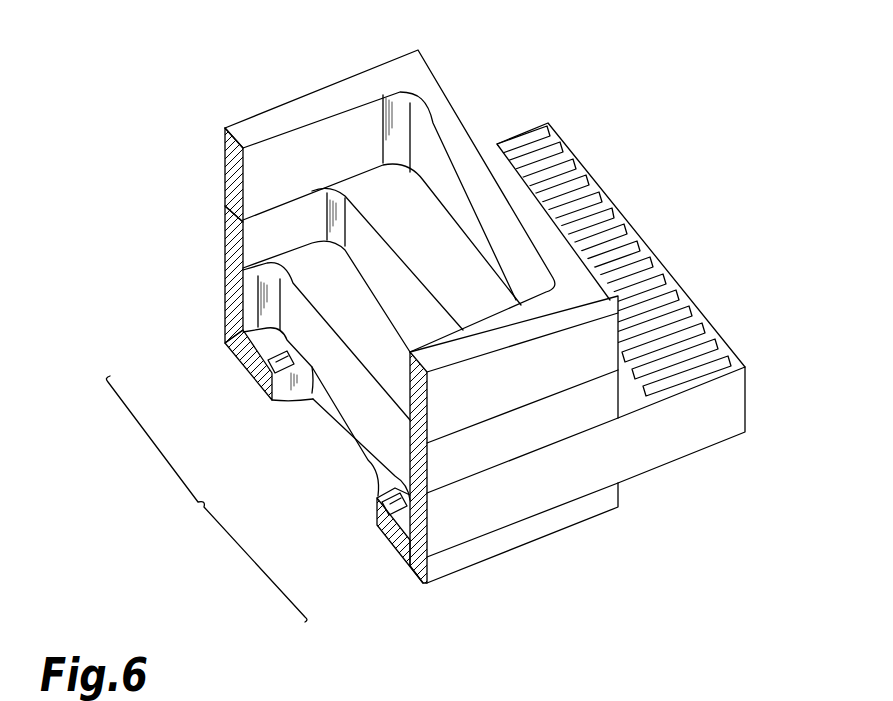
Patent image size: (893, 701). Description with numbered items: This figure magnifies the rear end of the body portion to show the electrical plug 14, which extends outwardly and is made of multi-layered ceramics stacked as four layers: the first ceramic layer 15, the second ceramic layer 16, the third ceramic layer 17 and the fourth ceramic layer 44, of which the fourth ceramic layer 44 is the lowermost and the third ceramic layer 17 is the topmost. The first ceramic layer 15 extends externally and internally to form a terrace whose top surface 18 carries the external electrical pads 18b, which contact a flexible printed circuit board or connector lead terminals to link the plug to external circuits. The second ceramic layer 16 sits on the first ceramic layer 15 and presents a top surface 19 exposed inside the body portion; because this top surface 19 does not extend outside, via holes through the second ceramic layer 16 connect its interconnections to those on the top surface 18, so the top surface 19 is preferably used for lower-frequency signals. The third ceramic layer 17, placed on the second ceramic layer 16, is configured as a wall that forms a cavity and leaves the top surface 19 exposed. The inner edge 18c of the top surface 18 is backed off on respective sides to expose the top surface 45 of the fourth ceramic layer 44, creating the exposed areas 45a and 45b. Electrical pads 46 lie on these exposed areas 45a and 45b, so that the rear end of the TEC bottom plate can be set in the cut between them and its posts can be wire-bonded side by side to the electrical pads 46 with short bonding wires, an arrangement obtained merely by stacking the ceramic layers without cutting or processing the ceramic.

The electrical plug 14 is at (172, 78).
The first ceramic layer 15 is at (722, 413).
The second ceramic layer 16 is at (232, 237).
The third ceramic layer 17 is at (232, 170).
The top surface 18 is at (318, 265).
The electrical pads 18b is at (640, 248).
The inner edge 18c is at (350, 385).
The top surface 19 is at (385, 178).
The fourth ceramic layer 44 is at (497, 545).
The top surface 45 is at (206, 499).
The exposed area 45a is at (235, 347).
The exposed area 45b is at (380, 535).
The electrical pads 46 is at (265, 360).